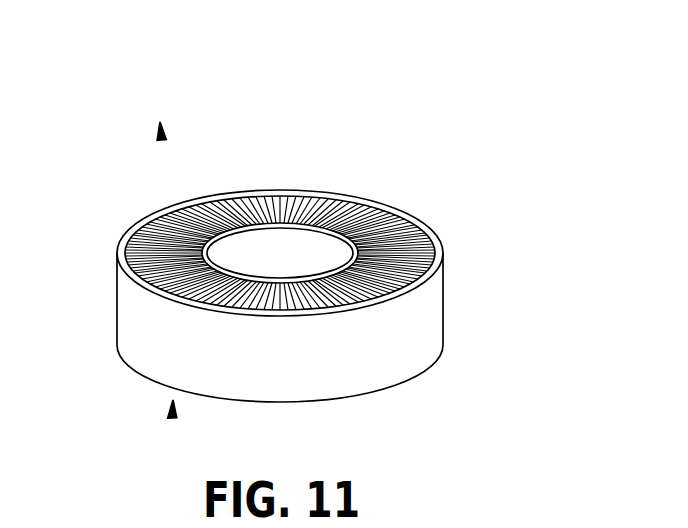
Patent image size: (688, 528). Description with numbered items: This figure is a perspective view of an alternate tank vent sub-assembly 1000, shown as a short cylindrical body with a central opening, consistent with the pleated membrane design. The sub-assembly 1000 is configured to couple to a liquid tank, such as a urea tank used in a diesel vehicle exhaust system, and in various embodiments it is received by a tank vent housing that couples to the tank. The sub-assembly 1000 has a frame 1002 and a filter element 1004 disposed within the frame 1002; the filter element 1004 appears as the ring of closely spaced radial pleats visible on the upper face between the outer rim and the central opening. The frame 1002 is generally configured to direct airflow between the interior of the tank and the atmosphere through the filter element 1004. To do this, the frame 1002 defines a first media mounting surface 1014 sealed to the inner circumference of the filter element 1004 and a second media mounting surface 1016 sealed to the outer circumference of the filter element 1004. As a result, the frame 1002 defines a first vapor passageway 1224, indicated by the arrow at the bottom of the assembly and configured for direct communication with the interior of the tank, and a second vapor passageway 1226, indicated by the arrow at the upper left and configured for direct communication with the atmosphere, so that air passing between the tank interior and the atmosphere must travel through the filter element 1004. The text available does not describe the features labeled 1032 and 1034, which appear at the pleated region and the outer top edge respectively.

The tank vent sub-assembly 1000 is at (268, 240).
The frame 1002 is at (140, 320).
The filter element 1004 is at (380, 221).
The first media mounting surface 1014 is at (287, 246).
The second media mounting surface 1016 is at (432, 313).
The fin 1032 is at (253, 232).
The top rim 1034 is at (443, 256).
The first vapor passageway 1224 is at (173, 418).
The second vapor passageway 1226 is at (165, 247).